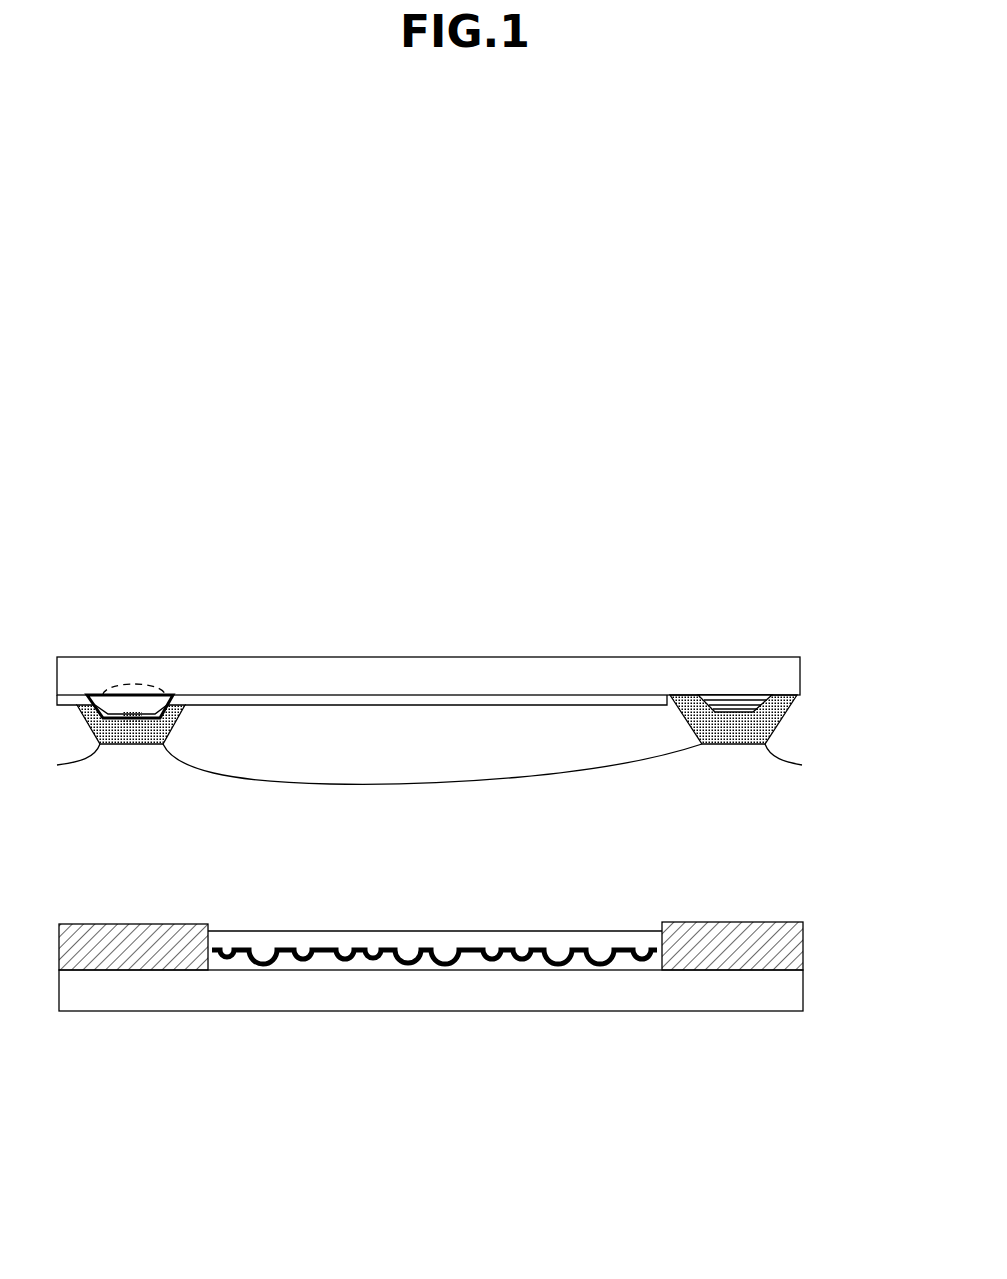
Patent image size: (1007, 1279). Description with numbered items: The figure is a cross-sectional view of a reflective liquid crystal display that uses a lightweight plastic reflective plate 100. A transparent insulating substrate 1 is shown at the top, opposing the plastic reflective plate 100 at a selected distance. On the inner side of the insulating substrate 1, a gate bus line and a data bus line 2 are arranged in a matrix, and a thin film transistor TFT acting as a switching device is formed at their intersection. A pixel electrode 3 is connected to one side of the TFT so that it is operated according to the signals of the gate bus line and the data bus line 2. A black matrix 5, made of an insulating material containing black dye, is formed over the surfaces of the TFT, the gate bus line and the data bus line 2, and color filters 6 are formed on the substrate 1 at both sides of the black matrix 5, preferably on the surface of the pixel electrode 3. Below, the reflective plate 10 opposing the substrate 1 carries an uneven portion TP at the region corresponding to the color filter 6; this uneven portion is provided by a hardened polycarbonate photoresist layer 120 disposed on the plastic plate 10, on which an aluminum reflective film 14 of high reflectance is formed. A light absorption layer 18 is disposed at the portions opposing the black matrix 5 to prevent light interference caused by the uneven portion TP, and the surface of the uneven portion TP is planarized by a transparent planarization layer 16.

The transparent insulating substrate 1 is at (790, 673).
The data bus line 2 is at (738, 693).
The pixel electrode 3 is at (370, 703).
The black matrix 5 is at (128, 744).
The color filter 6 is at (378, 760).
The thin film transistor TFT is at (137, 686).
The reflective plate 10 is at (795, 996).
The reflective film 14 is at (605, 962).
The planarization layer 16 is at (455, 950).
The light absorption layer 18 is at (793, 946).
The photoresist layer 120 is at (545, 963).
The plastic reflective plate 100 is at (823, 903).
The uneven portion TP is at (460, 903).